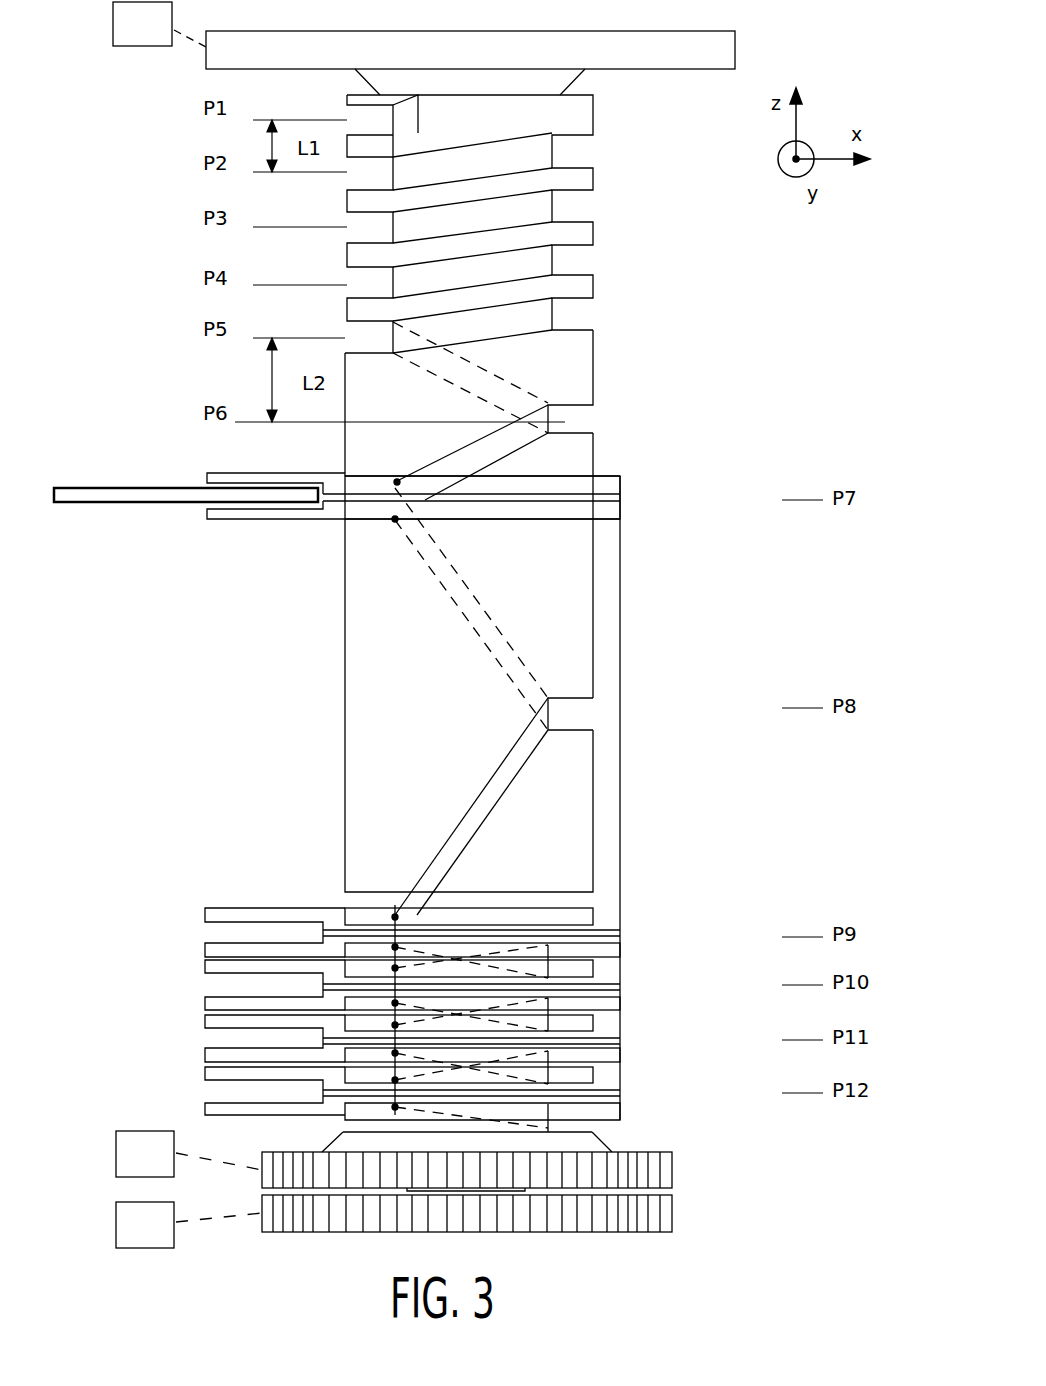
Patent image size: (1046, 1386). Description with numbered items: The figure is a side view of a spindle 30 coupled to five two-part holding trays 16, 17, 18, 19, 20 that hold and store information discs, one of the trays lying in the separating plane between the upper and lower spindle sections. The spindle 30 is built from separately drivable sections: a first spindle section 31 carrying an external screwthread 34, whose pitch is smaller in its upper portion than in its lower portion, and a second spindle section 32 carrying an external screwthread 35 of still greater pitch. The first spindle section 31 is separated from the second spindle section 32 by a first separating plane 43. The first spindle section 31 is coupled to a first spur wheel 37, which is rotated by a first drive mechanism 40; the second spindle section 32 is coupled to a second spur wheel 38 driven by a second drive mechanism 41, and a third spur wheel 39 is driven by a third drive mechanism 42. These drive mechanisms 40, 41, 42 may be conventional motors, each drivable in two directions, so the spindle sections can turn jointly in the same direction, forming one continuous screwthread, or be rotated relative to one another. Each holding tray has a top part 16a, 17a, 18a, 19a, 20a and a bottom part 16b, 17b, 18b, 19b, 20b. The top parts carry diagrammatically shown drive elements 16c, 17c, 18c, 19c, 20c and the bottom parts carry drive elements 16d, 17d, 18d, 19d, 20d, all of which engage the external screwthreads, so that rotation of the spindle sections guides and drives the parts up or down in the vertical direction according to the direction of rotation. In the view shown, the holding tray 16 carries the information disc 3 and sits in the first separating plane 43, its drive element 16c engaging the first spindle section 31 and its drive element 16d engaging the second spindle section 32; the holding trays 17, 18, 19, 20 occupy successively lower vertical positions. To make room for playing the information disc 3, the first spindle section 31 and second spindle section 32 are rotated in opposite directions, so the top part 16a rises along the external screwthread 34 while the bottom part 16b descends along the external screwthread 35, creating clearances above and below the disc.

The information disc 3 is at (115, 495).
The holding tray 16 is at (503, 497).
The top part 16a is at (602, 482).
The bottom part 16b is at (612, 509).
The drive element 16c is at (397, 478).
The drive element 16d is at (393, 523).
The holding tray 17 is at (442, 901).
The top part 17a is at (612, 917).
The bottom part 17b is at (619, 947).
The drive element 17c is at (395, 912).
The drive element 17d is at (405, 940).
The holding tray 18 is at (443, 981).
The top part 18a is at (610, 975).
The bottom part 18b is at (620, 1000).
The drive element 18c is at (400, 970).
The drive element 18d is at (400, 1005).
The holding tray 19 is at (443, 1045).
The top part 19a is at (610, 1025).
The bottom part 19b is at (613, 1052).
The drive element 19c is at (400, 1027).
The drive element 19d is at (400, 1055).
The holding tray 20 is at (443, 1109).
The top part 20a is at (615, 1080).
The bottom part 20b is at (613, 1113).
The drive element 20c is at (400, 1082).
The drive element 20d is at (400, 1109).
The spindle 30 is at (537, 224).
The first spindle section 31 is at (583, 258).
The second spindle section 32 is at (622, 637).
The external screwthread 34 is at (585, 322).
The external screwthread 35 is at (583, 715).
The first spur wheel 37 is at (738, 46).
The second spur wheel 38 is at (672, 1175).
The third spur wheel 39 is at (672, 1218).
The first drive mechanism 40 is at (159, 24).
The second drive mechanism 41 is at (189, 1154).
The third drive mechanism 42 is at (189, 1225).
The first separating plane 43 is at (338, 502).